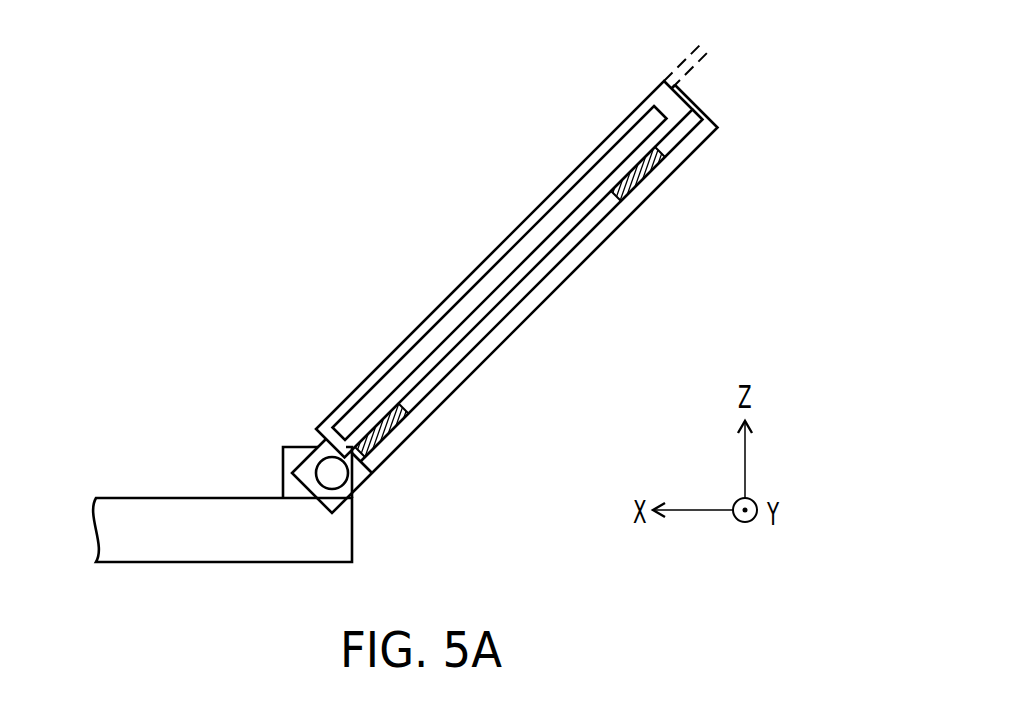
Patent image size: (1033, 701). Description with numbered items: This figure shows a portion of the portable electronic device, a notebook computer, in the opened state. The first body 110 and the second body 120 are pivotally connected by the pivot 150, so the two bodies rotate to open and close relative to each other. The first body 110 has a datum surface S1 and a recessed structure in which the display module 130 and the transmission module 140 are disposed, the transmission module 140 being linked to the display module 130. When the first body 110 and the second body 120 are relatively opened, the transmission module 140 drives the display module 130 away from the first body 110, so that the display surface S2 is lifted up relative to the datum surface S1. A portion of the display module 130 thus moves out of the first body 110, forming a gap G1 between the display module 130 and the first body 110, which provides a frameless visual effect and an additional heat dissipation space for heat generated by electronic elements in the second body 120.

The first body 110 is at (677, 153).
The second body 120 is at (155, 513).
The display module 130 is at (463, 284).
The transmission module 140 is at (651, 202).
The pivot 150 is at (310, 458).
The datum surface S1 is at (707, 58).
The display surface S2 is at (687, 44).
The gap G1 is at (497, 315).